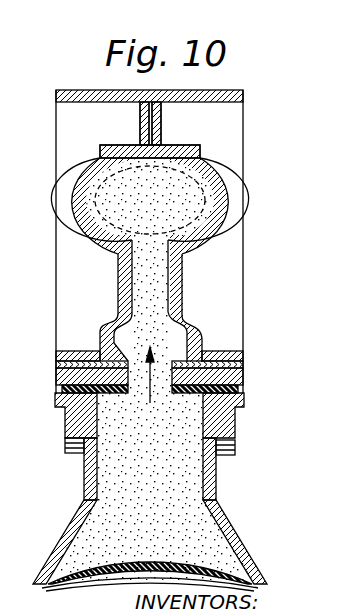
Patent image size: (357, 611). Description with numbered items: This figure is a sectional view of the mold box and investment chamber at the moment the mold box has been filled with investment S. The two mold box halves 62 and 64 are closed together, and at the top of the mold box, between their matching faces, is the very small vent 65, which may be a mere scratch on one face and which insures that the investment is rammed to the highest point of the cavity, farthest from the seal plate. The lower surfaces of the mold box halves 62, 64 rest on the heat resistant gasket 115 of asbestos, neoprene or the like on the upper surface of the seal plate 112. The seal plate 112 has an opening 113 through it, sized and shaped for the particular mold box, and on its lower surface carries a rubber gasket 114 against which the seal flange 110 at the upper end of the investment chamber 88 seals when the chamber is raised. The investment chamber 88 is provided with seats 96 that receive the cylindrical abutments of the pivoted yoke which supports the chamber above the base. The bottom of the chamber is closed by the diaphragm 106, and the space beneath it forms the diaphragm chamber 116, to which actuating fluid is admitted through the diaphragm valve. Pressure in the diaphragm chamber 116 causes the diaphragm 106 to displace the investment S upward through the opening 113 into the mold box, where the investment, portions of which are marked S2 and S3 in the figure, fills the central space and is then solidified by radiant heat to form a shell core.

The mold box half 62 is at (83, 90).
The mold box half 64 is at (230, 293).
The vent 65 is at (152, 123).
The investment chamber 88 is at (80, 472).
The seats 96 is at (65, 449).
The diaphragm 106 is at (93, 565).
The seal flange 110 is at (56, 401).
The seal plate 112 is at (56, 375).
The opening 113 is at (163, 384).
The gasket 114 is at (61, 388).
The heat resistant gasket 115 is at (56, 361).
The diaphragm chamber 116 is at (130, 577).
The investment S is at (178, 191).
The material in neck passage S2 is at (127, 281).
The material in bulb chamber S3 is at (203, 215).